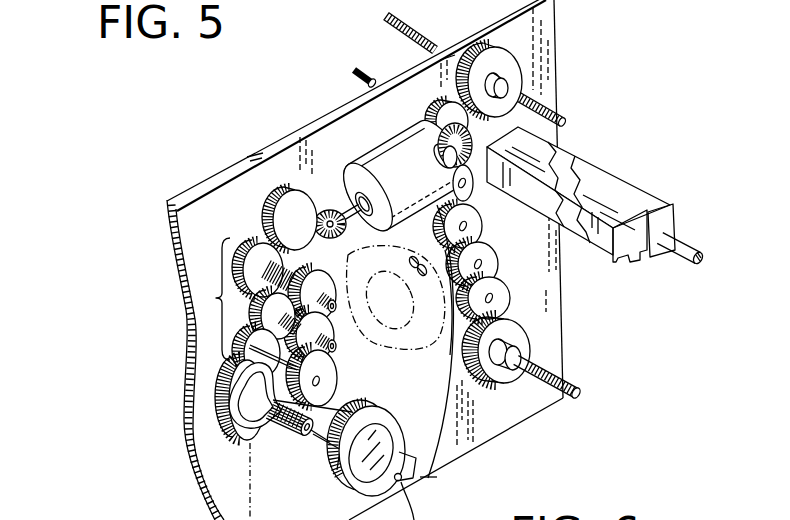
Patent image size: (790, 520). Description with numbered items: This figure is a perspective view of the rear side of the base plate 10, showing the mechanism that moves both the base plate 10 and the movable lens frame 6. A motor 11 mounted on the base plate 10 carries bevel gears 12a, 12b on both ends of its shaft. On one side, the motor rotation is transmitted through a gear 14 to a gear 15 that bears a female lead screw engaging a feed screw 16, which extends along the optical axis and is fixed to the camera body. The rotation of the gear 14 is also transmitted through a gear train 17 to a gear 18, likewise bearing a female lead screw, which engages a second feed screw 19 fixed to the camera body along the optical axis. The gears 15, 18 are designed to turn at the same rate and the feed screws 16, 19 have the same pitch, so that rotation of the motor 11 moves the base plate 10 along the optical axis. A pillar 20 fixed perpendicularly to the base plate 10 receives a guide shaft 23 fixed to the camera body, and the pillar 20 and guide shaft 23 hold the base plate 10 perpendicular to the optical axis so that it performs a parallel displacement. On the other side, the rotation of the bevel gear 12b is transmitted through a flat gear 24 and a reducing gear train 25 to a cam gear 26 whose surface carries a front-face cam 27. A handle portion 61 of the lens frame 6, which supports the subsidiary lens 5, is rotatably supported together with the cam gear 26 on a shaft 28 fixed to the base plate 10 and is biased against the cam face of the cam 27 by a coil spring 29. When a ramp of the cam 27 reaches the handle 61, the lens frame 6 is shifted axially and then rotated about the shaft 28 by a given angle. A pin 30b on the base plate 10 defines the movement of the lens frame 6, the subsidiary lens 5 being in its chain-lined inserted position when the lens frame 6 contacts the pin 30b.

The subsidiary lens 5 is at (354, 496).
The movable lens frame 6 is at (390, 398).
The base plate 10 is at (498, 413).
The motor 11 is at (383, 163).
The bevel gear 12a is at (447, 152).
The bevel gear 12b is at (328, 208).
The gear 14 is at (440, 120).
The gear 15 is at (505, 55).
The feed screw 16 is at (553, 107).
The gear train 17 is at (488, 183).
The gear 18 is at (518, 332).
The feed screw 19 is at (575, 380).
The pillar 20 is at (620, 200).
The guide shaft 23 is at (688, 264).
The flat gear 24 is at (285, 210).
The reducing gear train 25 is at (264, 322).
The cam gear 26 is at (228, 418).
The front-face cam 27 is at (232, 395).
The shaft 28 is at (348, 410).
The coil spring 29 is at (285, 430).
The pin 30b is at (410, 258).
The handle portion 61 is at (333, 452).